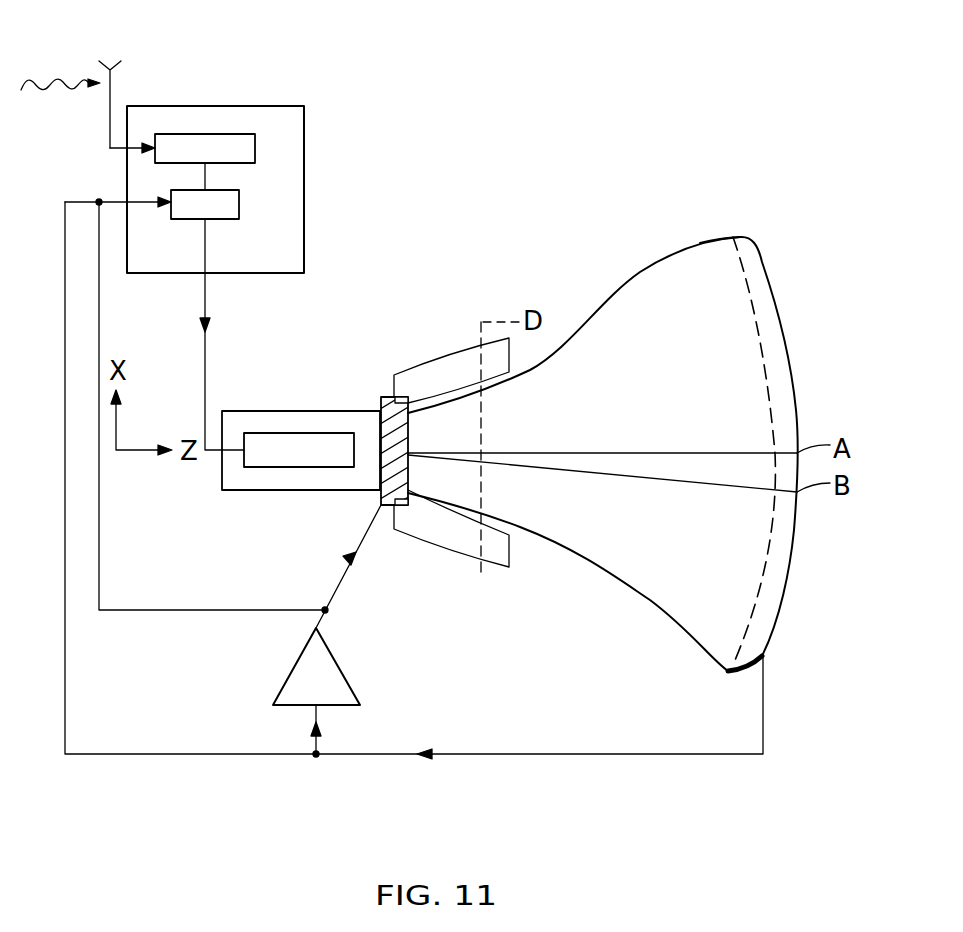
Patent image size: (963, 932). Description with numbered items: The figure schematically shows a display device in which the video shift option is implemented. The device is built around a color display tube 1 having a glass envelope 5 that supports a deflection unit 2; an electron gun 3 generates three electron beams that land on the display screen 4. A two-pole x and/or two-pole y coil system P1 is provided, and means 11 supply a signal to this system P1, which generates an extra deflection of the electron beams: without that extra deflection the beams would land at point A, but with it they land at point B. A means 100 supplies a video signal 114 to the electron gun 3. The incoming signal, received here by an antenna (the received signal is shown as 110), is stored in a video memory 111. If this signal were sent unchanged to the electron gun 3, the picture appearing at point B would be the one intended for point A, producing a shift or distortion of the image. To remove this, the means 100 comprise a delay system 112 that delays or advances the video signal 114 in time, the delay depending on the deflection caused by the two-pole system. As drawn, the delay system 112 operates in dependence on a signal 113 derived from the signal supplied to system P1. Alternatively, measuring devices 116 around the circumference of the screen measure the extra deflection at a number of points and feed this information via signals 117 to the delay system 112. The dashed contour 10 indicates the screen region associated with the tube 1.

The color display tube 1 is at (721, 692).
The deflection unit 2 is at (418, 385).
The electron gun 3 is at (278, 462).
The display screen 4 is at (778, 296).
The glass envelope 5 is at (682, 249).
The reflecting surface 10 is at (755, 605).
The means to supply a signal to the system P1 11 is at (328, 686).
The means to supply a video signal 100 is at (210, 95).
The radio signal 110 is at (88, 98).
The video memory 111 is at (245, 150).
The delay system 112 is at (228, 207).
The signal 113 is at (233, 608).
The video signal 114 is at (207, 368).
The measuring devices 116 is at (765, 665).
The signals 117 is at (650, 760).
The two-pole coil system P1 is at (381, 432).